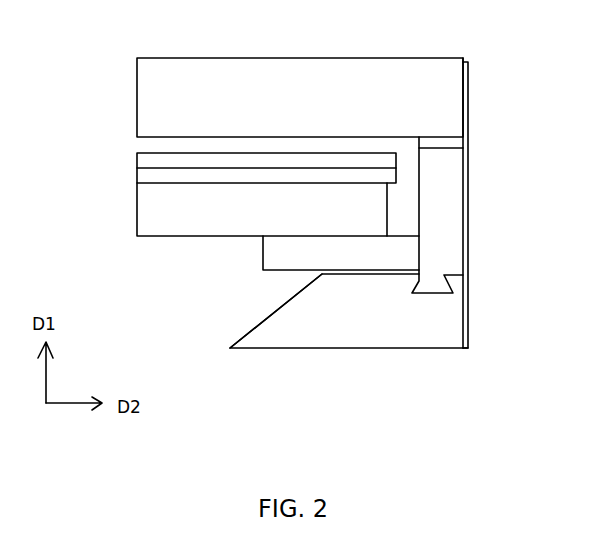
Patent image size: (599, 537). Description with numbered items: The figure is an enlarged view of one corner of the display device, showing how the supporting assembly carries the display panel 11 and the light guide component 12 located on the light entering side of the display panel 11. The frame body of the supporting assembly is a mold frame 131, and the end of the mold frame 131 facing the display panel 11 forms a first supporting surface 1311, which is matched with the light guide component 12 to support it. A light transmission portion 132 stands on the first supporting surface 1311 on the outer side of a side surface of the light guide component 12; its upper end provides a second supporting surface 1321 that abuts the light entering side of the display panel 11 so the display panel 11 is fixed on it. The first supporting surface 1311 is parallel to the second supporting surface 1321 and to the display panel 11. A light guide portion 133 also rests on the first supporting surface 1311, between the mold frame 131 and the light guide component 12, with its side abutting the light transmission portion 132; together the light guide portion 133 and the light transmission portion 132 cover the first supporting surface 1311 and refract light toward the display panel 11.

The display panel 11 is at (155, 87).
The light guide component 12 is at (153, 210).
The mold frame 131 is at (420, 348).
The first supporting surface 1311 is at (363, 275).
The light transmission portion 132 is at (447, 217).
The second supporting surface 1321 is at (447, 149).
The light guide portion 133 is at (264, 246).